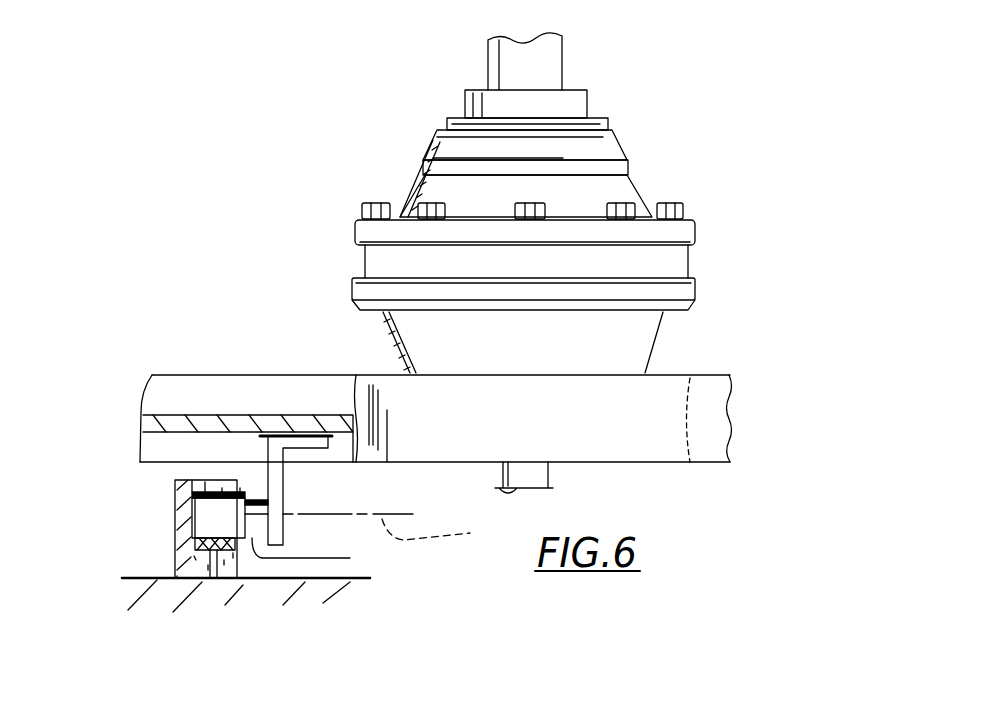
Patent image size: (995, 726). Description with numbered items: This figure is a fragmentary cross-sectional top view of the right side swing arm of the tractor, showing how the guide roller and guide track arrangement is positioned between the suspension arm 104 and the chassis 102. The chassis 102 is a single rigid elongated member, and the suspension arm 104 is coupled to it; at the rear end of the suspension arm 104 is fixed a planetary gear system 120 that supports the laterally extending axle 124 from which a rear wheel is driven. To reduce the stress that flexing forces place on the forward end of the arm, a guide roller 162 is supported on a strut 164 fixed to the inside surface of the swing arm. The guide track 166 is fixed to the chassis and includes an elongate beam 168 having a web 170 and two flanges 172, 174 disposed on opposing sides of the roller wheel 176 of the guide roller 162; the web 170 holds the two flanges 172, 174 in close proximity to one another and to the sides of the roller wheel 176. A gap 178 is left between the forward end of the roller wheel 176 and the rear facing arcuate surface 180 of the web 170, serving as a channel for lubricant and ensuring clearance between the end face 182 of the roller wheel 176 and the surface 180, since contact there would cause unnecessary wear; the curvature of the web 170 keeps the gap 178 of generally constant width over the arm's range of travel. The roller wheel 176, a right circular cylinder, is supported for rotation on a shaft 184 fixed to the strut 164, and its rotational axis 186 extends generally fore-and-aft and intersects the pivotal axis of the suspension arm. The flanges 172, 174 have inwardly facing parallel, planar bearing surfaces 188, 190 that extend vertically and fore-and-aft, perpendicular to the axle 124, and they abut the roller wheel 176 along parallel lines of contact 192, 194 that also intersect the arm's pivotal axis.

The chassis 102 is at (278, 578).
The right suspension arm 104 is at (223, 377).
The planetary gear system 120 is at (695, 228).
The axle 124 is at (562, 36).
The guide roller 162 is at (175, 502).
The strut 164 is at (283, 532).
The guide track 166 is at (187, 518).
The elongate beam 168 is at (217, 580).
The web 170 is at (240, 520).
The flange 172 is at (208, 565).
The flange 174 is at (207, 482).
The roller wheel 176 is at (233, 553).
The gap 178 is at (178, 576).
The rear facing arcuate surface 180 is at (268, 509).
The end face 182 is at (190, 533).
The shaft 184 is at (350, 558).
The rotational axis 186 is at (401, 530).
The bearing surface 188 is at (240, 488).
The bearing surface 190 is at (195, 556).
The line of contact 192 is at (223, 488).
The line of contact 194 is at (224, 560).